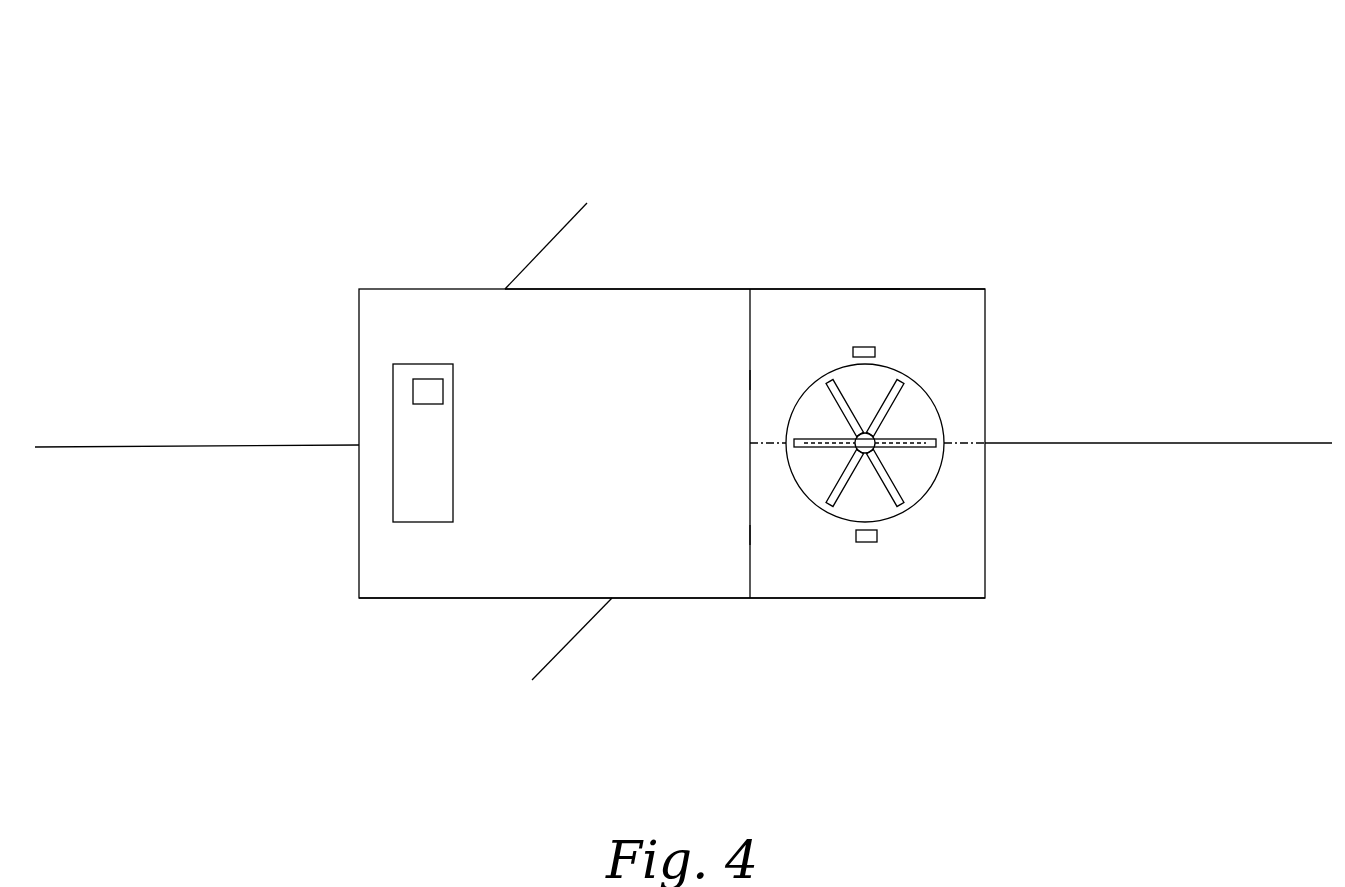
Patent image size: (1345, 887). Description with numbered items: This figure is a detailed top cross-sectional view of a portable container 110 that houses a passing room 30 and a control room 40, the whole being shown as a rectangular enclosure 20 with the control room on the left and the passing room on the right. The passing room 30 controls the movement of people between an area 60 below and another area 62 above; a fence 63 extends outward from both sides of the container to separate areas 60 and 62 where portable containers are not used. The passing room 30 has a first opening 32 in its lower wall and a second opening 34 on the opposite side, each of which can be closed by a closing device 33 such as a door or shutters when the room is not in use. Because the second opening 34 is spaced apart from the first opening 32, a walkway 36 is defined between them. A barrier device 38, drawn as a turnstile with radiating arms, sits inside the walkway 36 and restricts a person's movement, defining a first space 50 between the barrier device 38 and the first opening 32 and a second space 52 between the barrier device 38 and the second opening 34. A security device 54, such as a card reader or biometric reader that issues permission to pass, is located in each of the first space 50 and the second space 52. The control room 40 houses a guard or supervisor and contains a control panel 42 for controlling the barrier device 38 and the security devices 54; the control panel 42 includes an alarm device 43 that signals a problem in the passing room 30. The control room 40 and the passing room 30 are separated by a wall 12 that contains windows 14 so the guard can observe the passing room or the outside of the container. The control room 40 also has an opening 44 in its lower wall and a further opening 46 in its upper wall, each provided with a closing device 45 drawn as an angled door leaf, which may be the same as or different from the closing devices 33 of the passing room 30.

The portable container 110 is at (684, 120).
The outdoor unit housing 20 is at (357, 322).
The wall 12 is at (750, 452).
The window 14 is at (750, 382).
The control room 40 is at (419, 318).
The passing room 30 is at (768, 318).
The closing device 45 is at (556, 232).
The top wall of compressor compartment 46 is at (602, 288).
The opening 44 is at (515, 600).
The control panel 42 is at (453, 467).
The alarm device 43 is at (443, 391).
The second opening 34 is at (903, 288).
The closing device 33 is at (878, 288).
The first opening 32 is at (847, 600).
The walkway 36 is at (820, 537).
The barrier device 38 is at (912, 497).
The security device 54 is at (875, 352).
The second space 52 is at (877, 327).
The first space 50 is at (885, 582).
The area 62 is at (882, 145).
The area 60 is at (858, 750).
The fence 63 is at (168, 446).